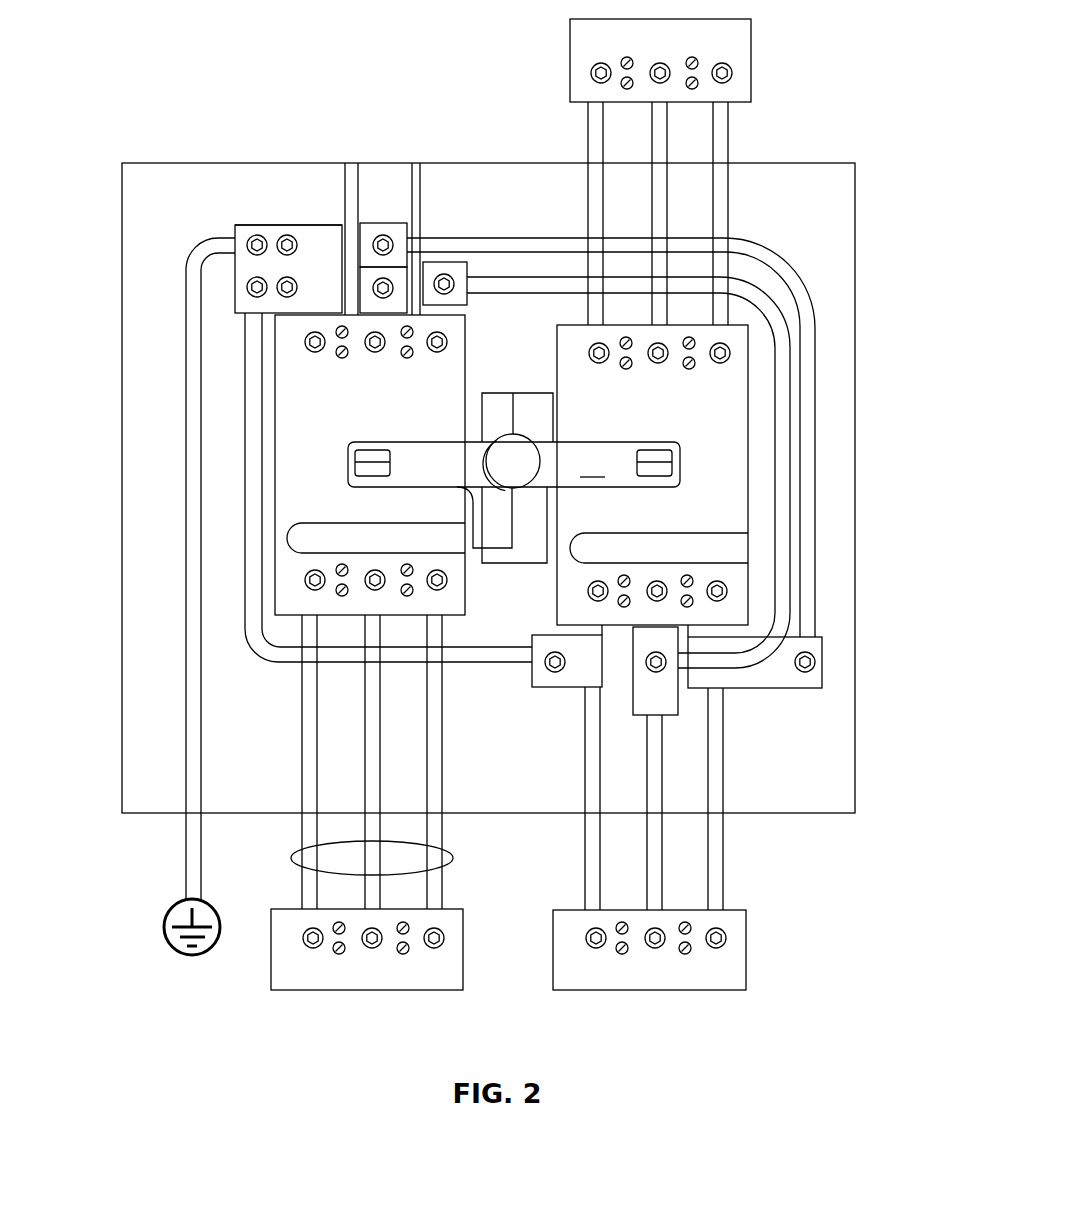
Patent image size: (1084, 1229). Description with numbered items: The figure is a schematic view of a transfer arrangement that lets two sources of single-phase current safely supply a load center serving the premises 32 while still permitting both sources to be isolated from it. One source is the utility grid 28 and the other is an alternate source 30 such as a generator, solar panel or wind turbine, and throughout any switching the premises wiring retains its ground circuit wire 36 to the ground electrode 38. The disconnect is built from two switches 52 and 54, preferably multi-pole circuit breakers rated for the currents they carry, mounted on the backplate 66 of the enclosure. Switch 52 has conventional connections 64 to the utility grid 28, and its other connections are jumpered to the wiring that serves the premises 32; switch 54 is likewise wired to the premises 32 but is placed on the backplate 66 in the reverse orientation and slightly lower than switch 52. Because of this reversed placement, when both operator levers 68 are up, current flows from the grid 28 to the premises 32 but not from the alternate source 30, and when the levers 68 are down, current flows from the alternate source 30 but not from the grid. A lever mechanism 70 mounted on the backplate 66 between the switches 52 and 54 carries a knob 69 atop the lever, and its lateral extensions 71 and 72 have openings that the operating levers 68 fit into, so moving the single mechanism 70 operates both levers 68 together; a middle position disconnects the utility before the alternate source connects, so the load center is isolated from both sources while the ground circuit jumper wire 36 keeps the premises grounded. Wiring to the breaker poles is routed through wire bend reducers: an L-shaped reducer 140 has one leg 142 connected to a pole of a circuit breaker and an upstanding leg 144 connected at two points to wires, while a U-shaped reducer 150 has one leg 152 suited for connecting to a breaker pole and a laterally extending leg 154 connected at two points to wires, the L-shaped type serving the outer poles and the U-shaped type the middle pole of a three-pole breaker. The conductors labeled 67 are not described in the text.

The backplate 66 is at (820, 797).
The alternate source 30 is at (752, 67).
The utility grid 28 is at (298, 985).
The premises 32 is at (593, 985).
The ground electrode 38 is at (163, 922).
The L-shaped wire bend reducer 140 is at (333, 270).
The upstanding leg 144 is at (245, 223).
The leg 142 is at (322, 304).
The laterally extending leg 154 is at (397, 228).
The leg 152 is at (398, 277).
The conductor 67 is at (247, 512).
The switch 52 is at (297, 548).
The switch 54 is at (747, 543).
The ground circuit wire 36 is at (472, 655).
The U-shaped wire bend reducer 150 is at (366, 222).
The lever mechanism 70 is at (555, 452).
The knob 69 is at (513, 460).
The lateral extension 71 is at (427, 477).
The operator lever 68 is at (665, 469).
The lateral extension 72 is at (594, 465).
The conventional connections 64 is at (293, 863).